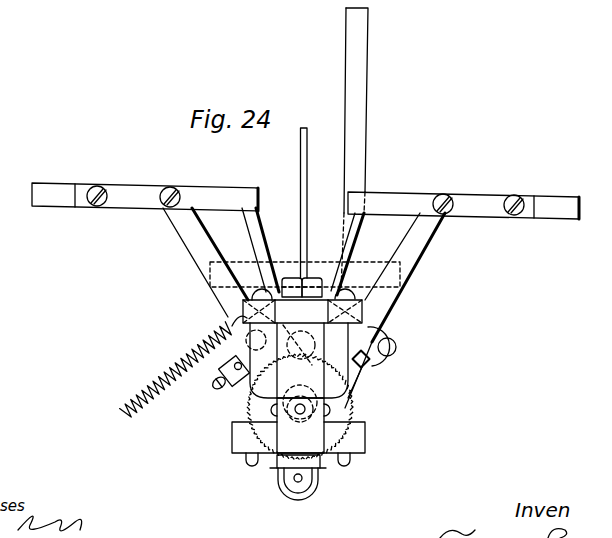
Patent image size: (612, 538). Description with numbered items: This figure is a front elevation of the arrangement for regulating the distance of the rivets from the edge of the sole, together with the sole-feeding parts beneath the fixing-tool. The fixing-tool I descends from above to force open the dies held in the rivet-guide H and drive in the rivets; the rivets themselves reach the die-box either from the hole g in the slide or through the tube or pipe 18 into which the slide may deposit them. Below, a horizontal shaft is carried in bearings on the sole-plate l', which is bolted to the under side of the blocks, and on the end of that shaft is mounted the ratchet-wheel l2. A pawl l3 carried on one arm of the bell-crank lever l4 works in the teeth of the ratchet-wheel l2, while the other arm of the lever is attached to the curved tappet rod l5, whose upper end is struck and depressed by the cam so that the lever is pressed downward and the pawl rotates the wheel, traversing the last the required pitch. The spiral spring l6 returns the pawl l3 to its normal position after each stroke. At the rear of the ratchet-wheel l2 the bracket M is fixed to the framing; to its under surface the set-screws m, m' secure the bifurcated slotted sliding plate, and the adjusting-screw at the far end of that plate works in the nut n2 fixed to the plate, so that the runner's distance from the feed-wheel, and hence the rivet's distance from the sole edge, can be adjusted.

The sole-plate l' is at (305, 190).
The ratchet-wheel l2 is at (252, 407).
The pawl l3 is at (302, 311).
The bell-crank lever l4 is at (373, 368).
The curved tappet rod l5 is at (369, 78).
The spiral spring l6 is at (177, 369).
The fixing-tool I is at (301, 158).
The hole in slide g is at (263, 232).
The tube or pipe 18 is at (298, 248).
The rivet-guide H is at (300, 424).
The bracket M is at (240, 438).
The set-screw m is at (245, 472).
The set-screw m' is at (359, 470).
The nut n2 is at (314, 497).